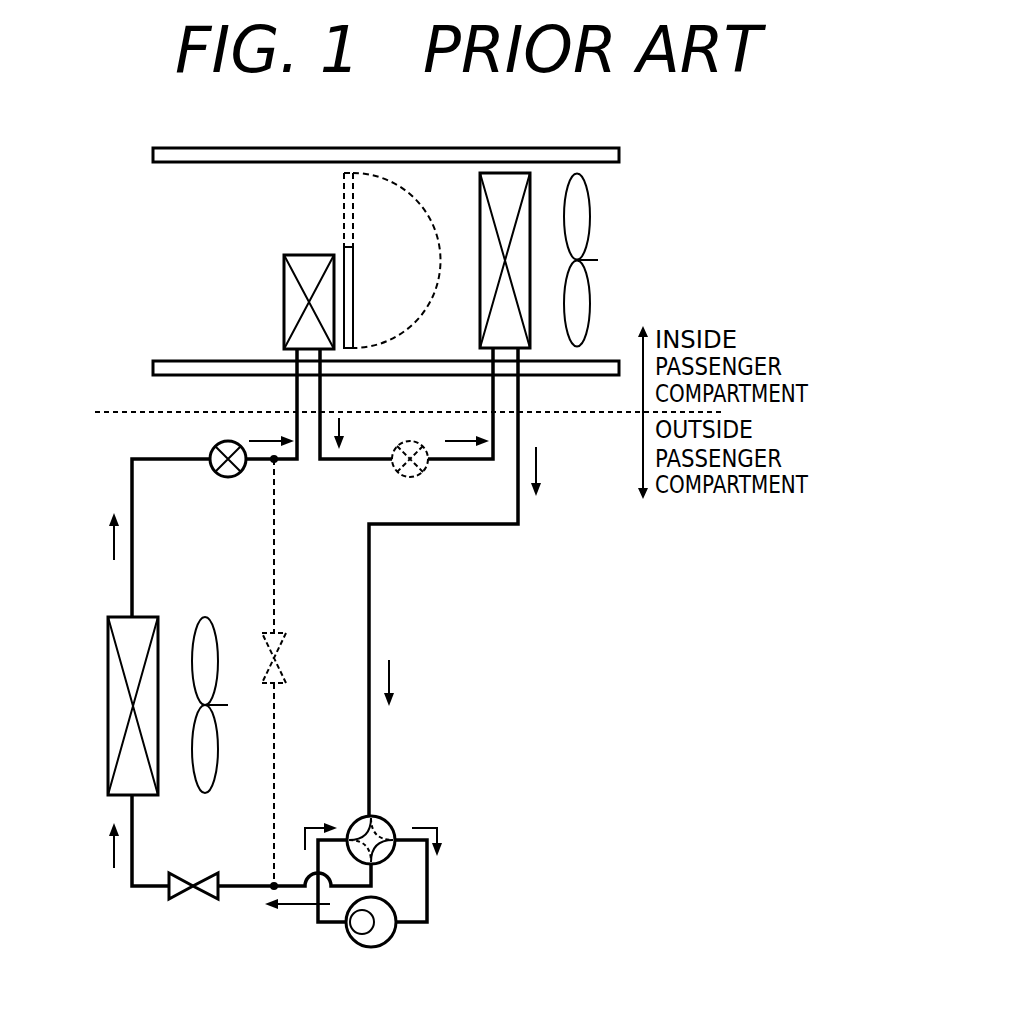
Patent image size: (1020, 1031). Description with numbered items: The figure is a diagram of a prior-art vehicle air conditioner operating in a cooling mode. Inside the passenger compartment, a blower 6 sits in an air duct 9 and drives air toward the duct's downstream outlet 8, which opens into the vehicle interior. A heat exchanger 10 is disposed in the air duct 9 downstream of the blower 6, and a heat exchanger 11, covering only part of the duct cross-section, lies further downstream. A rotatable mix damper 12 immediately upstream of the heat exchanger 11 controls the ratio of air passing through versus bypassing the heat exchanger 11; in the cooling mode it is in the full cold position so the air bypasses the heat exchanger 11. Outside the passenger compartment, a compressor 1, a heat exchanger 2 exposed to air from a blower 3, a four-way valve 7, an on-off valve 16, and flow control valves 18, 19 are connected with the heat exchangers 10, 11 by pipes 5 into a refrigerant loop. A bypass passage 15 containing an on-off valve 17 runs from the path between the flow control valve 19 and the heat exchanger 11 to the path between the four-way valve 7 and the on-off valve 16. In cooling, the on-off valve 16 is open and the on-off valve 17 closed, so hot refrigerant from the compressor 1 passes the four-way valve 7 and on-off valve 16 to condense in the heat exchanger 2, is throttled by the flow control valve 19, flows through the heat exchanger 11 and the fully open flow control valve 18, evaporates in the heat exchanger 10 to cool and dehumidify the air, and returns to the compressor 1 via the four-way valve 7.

The compressor 1 is at (358, 945).
The heat exchanger 2 is at (144, 617).
The blower 3 is at (212, 630).
The pipes 5 is at (298, 462).
The blower 6 is at (588, 208).
The four-way valve 7 is at (384, 820).
The outlet 8 is at (144, 206).
The air duct 9 is at (197, 360).
The heat exchanger 10 is at (480, 211).
The heat exchanger 11 is at (306, 260).
The mix damper 12 is at (344, 210).
The bypass passage 15 is at (274, 581).
The on-off valve 16 is at (204, 861).
The on-off valve 17 is at (280, 654).
The flow control valve 18 is at (414, 477).
The flow control valve 19 is at (223, 477).